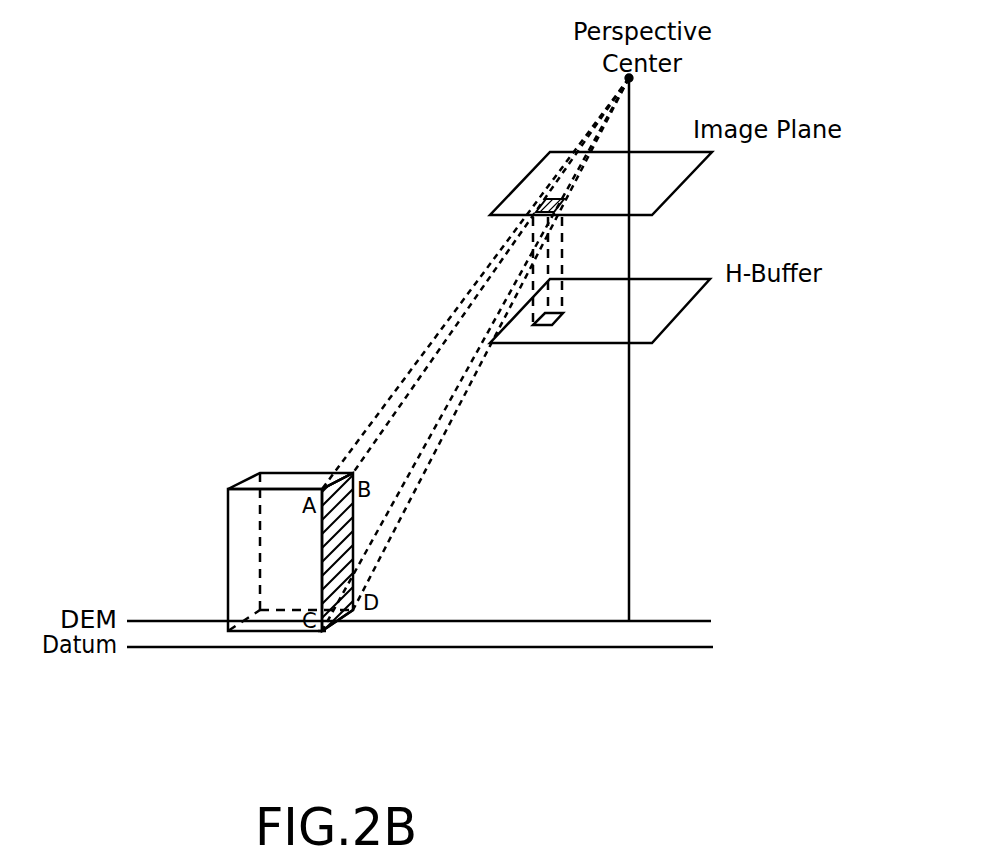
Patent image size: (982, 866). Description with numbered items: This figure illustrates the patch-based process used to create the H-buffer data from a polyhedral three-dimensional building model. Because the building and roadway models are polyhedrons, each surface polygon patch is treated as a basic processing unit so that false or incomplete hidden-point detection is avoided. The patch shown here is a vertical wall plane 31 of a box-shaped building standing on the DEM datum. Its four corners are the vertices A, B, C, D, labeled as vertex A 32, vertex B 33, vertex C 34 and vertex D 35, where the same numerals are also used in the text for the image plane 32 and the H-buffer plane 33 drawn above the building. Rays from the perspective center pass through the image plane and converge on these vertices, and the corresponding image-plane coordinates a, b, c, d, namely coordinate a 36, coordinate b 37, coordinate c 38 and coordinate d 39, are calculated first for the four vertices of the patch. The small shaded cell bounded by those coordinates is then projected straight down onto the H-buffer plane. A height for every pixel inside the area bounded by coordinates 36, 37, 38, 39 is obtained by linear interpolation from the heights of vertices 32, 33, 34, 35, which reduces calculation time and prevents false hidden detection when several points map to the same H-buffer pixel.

The vertical wall plane 31 is at (340, 543).
The vertex A 32 is at (320, 489).
The vertex B 33 is at (350, 473).
The vertex C 34 is at (345, 613).
The vertex D 35 is at (323, 632).
The coordinate a 36 is at (535, 206).
The coordinate b 37 is at (541, 197).
The coordinate c 38 is at (562, 198).
The coordinate d 39 is at (560, 212).